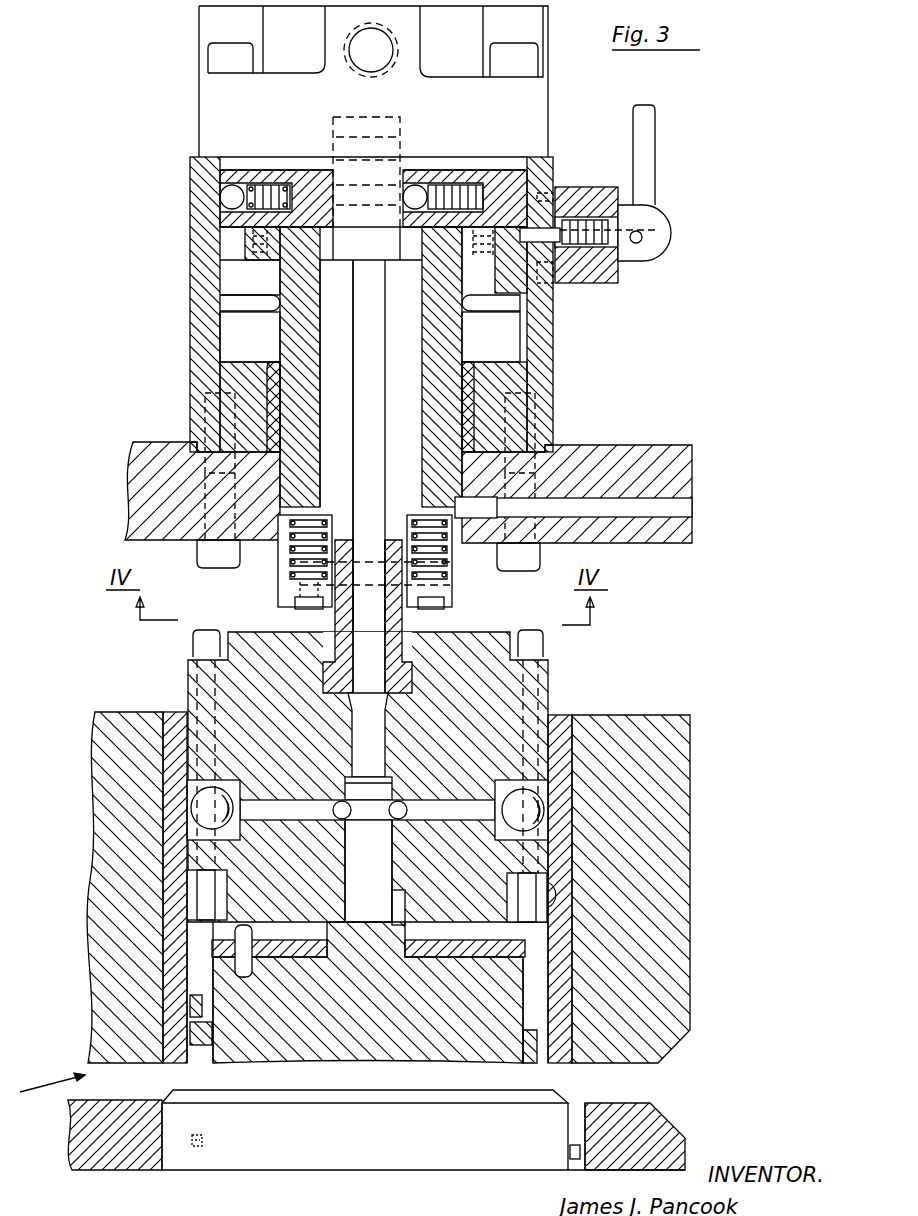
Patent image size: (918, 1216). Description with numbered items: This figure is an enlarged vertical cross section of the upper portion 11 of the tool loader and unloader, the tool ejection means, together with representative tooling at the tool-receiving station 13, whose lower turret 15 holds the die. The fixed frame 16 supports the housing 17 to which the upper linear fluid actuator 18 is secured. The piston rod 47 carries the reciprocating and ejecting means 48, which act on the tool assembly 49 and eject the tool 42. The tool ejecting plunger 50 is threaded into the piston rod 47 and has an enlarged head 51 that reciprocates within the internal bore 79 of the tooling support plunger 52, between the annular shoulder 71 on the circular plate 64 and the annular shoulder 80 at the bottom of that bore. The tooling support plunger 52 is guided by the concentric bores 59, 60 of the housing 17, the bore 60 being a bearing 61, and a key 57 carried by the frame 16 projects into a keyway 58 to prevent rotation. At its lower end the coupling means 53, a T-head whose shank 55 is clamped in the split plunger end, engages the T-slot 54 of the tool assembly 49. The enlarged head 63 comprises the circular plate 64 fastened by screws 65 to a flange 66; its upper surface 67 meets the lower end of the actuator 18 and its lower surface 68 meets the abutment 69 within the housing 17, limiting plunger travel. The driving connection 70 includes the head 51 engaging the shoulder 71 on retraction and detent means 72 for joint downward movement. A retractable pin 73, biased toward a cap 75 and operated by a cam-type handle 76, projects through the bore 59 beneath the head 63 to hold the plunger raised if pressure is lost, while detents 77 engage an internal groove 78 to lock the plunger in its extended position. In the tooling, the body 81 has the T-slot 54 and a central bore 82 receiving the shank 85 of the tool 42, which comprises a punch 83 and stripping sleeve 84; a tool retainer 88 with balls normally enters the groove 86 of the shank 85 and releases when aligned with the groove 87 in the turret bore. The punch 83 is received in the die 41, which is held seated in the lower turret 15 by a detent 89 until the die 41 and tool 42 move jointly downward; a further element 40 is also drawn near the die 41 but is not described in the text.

The upper portion of tool loader and unloader 11 is at (178, 384).
The tool-receiving station 13 is at (50, 1089).
The turret 15 is at (115, 1162).
The frame 16 is at (140, 466).
The housing 17 is at (192, 222).
The upper linear fluid actuator 18 is at (212, 28).
The detent 40 is at (570, 1150).
The die 41 is at (315, 1148).
The tool 42 is at (548, 1008).
The piston rod 47 is at (340, 182).
The reciprocating and ejecting means 48 is at (238, 266).
The tool assembly 49 is at (250, 632).
The tool ejecting plunger 50 is at (390, 325).
The enlarged head 51 is at (343, 243).
The tooling support plunger 52 is at (318, 335).
The coupling means 53 is at (420, 636).
The T-slot 54 is at (366, 688).
The shank 55 is at (380, 565).
The key 57 is at (480, 505).
The keyway 58 is at (458, 565).
The bore 59 is at (224, 338).
The bore 60 is at (278, 352).
The bearing 61 is at (285, 405).
The enlarged head 63 is at (240, 232).
The circular plate 64 is at (302, 185).
The screws 65 is at (252, 180).
The flange 66 is at (257, 260).
The upper surface 67 is at (452, 182).
The lower surface 68 is at (491, 292).
The abutment 69 is at (493, 360).
The driving connection 70 is at (418, 240).
The annular shoulder 71 is at (336, 262).
The detent means 72 is at (418, 184).
The retractable pin 73 is at (550, 268).
The cap 75 is at (582, 190).
The cam-type handle 76 is at (658, 232).
The detents 77 is at (220, 197).
The internal groove 78 is at (220, 304).
The internal bore 79 is at (418, 332).
The annular shoulder 80 is at (398, 500).
The body 81 is at (515, 690).
The central bore 82 is at (386, 715).
The punch 83 is at (393, 1040).
The stripping sleeve 84 is at (535, 1000).
The shank 85 is at (372, 898).
The groove 86 is at (372, 822).
The groove 87 is at (180, 905).
The tool retainer 88 is at (466, 818).
The detent 89 is at (172, 1150).